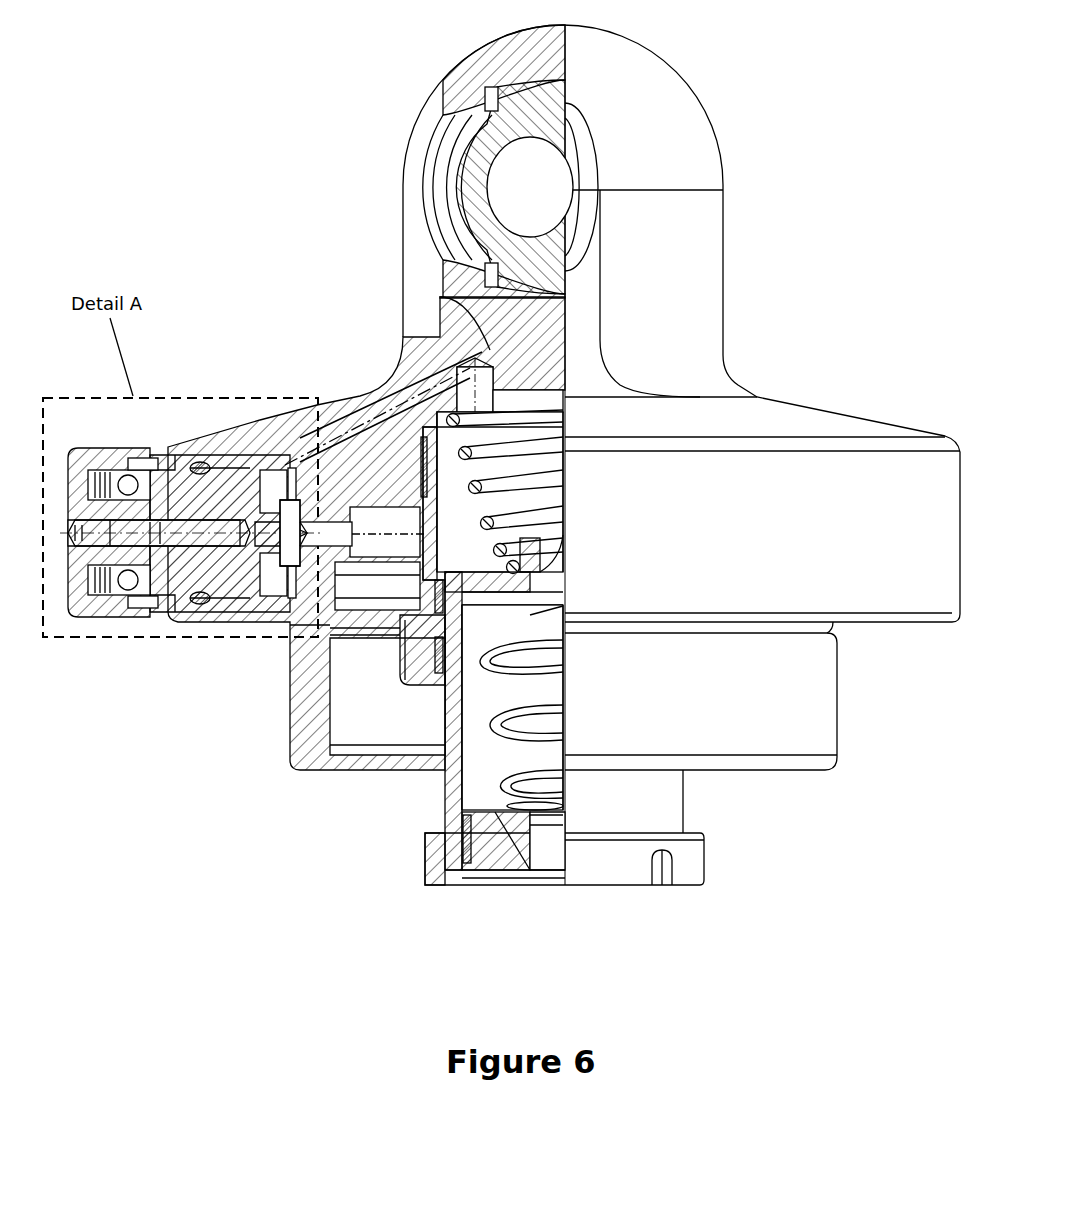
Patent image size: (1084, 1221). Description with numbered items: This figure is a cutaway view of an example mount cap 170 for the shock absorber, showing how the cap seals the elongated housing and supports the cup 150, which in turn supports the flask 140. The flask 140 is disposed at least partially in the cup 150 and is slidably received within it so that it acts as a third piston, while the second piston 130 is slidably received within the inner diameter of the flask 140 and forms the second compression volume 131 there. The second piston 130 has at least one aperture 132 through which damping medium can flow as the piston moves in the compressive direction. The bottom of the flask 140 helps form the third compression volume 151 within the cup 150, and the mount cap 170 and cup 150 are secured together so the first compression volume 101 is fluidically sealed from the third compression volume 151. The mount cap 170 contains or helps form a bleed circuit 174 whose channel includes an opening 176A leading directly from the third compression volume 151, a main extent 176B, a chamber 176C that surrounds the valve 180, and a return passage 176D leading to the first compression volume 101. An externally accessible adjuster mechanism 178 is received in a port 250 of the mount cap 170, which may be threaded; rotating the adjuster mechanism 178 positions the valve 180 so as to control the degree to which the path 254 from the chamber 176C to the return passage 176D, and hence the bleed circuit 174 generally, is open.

The mount cap 170 is at (252, 140).
The opening 176A is at (484, 384).
The main extent 176B is at (365, 425).
The chamber 176C is at (243, 447).
The return passage 176D is at (285, 592).
The bleed circuit 174 is at (285, 470).
The path 254 is at (280, 490).
The first compression volume 101 is at (357, 558).
The third compression volume 151 is at (492, 495).
The second compression volume 131 is at (512, 707).
The cup 150 is at (395, 647).
The flask 140 is at (445, 803).
The second piston 130 is at (488, 850).
The aperture 132 is at (546, 836).
The adjuster mechanism 178 is at (103, 618).
The valve 180 is at (298, 552).
The port 250 is at (275, 592).